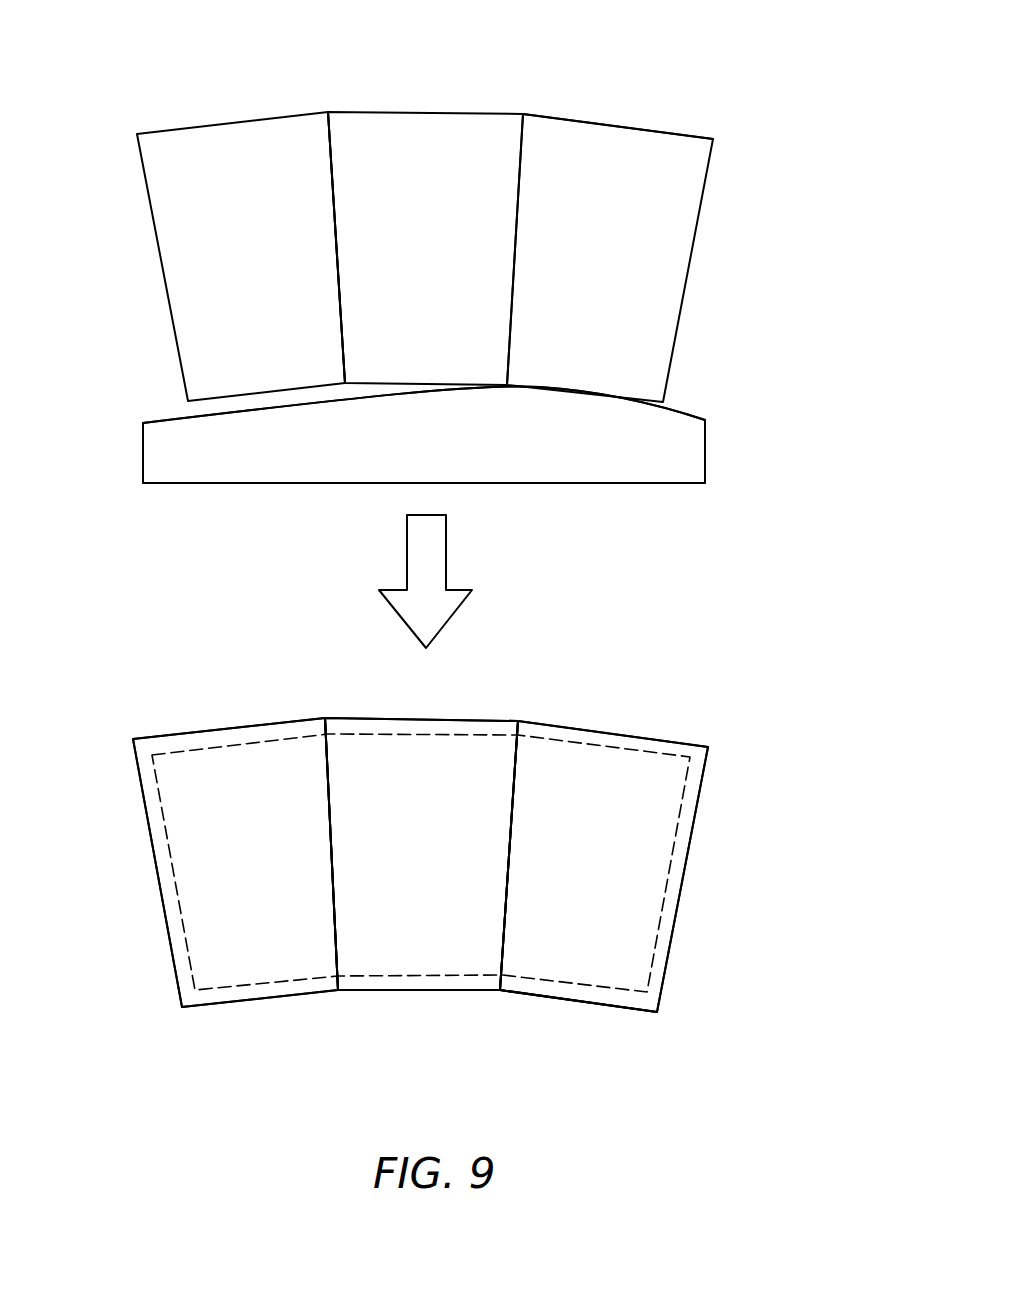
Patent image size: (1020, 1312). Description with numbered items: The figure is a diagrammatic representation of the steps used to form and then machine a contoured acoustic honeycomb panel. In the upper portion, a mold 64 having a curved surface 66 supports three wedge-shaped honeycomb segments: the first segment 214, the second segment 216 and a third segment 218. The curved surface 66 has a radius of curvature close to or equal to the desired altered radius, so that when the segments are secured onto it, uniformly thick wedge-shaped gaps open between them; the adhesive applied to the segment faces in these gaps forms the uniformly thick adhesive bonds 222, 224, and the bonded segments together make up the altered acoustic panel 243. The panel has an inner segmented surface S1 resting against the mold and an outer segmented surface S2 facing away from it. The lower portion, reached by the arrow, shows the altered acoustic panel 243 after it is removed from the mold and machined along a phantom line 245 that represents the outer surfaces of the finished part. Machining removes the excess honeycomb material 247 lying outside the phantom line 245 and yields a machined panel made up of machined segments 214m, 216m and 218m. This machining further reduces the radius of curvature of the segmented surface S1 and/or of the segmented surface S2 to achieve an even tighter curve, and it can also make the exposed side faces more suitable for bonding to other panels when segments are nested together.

The altered acoustic panel 243 is at (235, 100).
The adhesive bond 222 is at (333, 133).
The second segment 216 is at (500, 115).
The adhesive bond 224 is at (523, 138).
The wedge-shaped segment 218 is at (698, 217).
The first segment 214 is at (167, 287).
The curved surface 66 is at (687, 418).
The mold 64 is at (424, 434).
The segmented surface S1 is at (535, 388).
The segmented surface S2 is at (467, 735).
The machined segment 214m is at (235, 862).
The machined segment 216m is at (421, 854).
The machined segment 218m is at (604, 866).
The phantom line 245 is at (663, 898).
The excess honeycomb material 247 is at (657, 967).